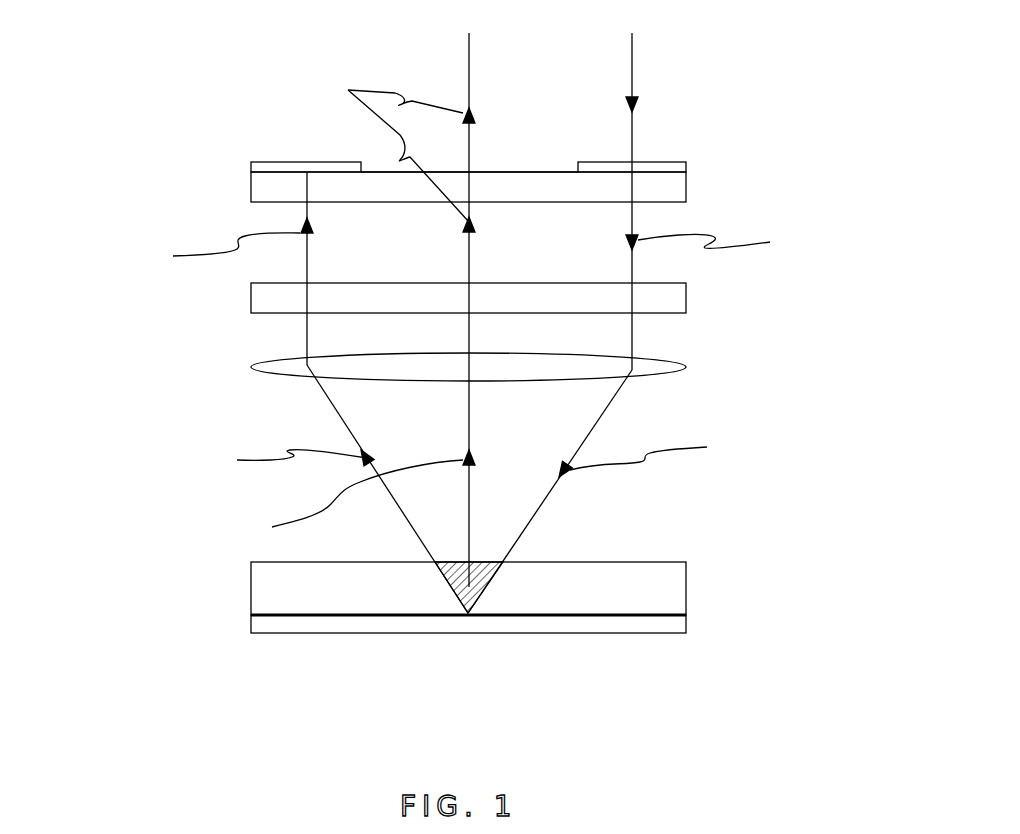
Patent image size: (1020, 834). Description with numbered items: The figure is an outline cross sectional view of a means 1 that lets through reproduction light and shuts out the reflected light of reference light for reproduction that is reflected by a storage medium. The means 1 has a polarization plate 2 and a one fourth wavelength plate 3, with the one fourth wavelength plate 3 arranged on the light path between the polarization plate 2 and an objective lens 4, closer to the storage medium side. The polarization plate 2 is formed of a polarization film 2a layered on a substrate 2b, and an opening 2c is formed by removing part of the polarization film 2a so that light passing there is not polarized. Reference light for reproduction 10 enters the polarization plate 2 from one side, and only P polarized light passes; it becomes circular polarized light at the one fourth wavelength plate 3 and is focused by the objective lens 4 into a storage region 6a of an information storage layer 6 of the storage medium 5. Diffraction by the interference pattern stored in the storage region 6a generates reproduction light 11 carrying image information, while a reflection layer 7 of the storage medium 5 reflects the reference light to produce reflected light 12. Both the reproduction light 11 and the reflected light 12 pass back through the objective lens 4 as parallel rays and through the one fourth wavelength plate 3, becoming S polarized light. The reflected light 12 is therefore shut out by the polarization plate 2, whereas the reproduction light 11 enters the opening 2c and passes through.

The means to let through reproduction light and shut out reflected light 1 is at (158, 140).
The polarization plate 2 is at (662, 152).
The polarization film 2a is at (686, 166).
The substrate 2b is at (686, 184).
The opening 2c is at (578, 162).
The one fourth wavelength plate 3 is at (686, 298).
The objective lens 4 is at (686, 366).
The storage medium 5 is at (665, 552).
The information storage layer 6 is at (686, 585).
The storage region 6a is at (470, 614).
The reflection layer 7 is at (686, 620).
The reference light for reproduction 10 is at (632, 65).
The reproduction light 11 is at (469, 60).
The reflected light 12 is at (340, 422).